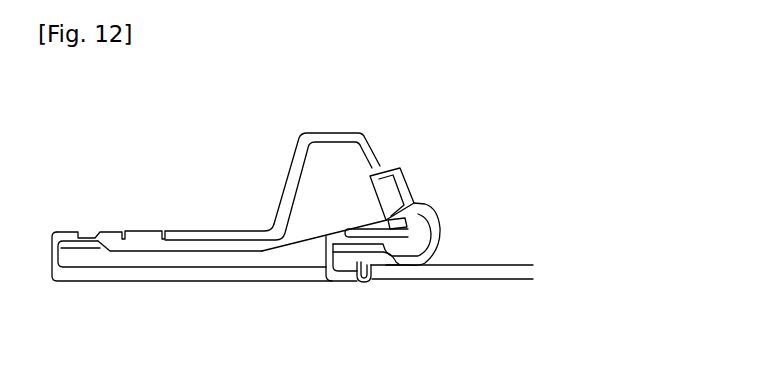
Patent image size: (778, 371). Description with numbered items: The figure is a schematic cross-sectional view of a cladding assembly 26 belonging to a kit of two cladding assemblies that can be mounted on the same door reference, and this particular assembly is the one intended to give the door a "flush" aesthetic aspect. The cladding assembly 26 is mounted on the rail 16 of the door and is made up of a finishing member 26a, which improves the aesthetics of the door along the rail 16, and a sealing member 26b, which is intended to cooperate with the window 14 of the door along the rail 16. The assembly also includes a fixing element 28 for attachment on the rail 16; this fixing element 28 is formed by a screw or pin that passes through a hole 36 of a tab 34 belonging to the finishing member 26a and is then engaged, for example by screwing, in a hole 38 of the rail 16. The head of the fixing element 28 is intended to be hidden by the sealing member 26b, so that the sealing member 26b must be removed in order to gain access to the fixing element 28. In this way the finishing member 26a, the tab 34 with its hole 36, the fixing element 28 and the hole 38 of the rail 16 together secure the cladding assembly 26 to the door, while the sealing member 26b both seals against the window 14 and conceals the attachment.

The window 14 is at (502, 265).
The rail 16 is at (291, 126).
The cladding assembly 26 is at (436, 125).
The finishing member 26a is at (193, 294).
The sealing member 26b is at (452, 208).
The fixing element 28 is at (365, 206).
The tab 34 is at (328, 251).
The hole 36 is at (412, 200).
The hole 38 is at (405, 172).